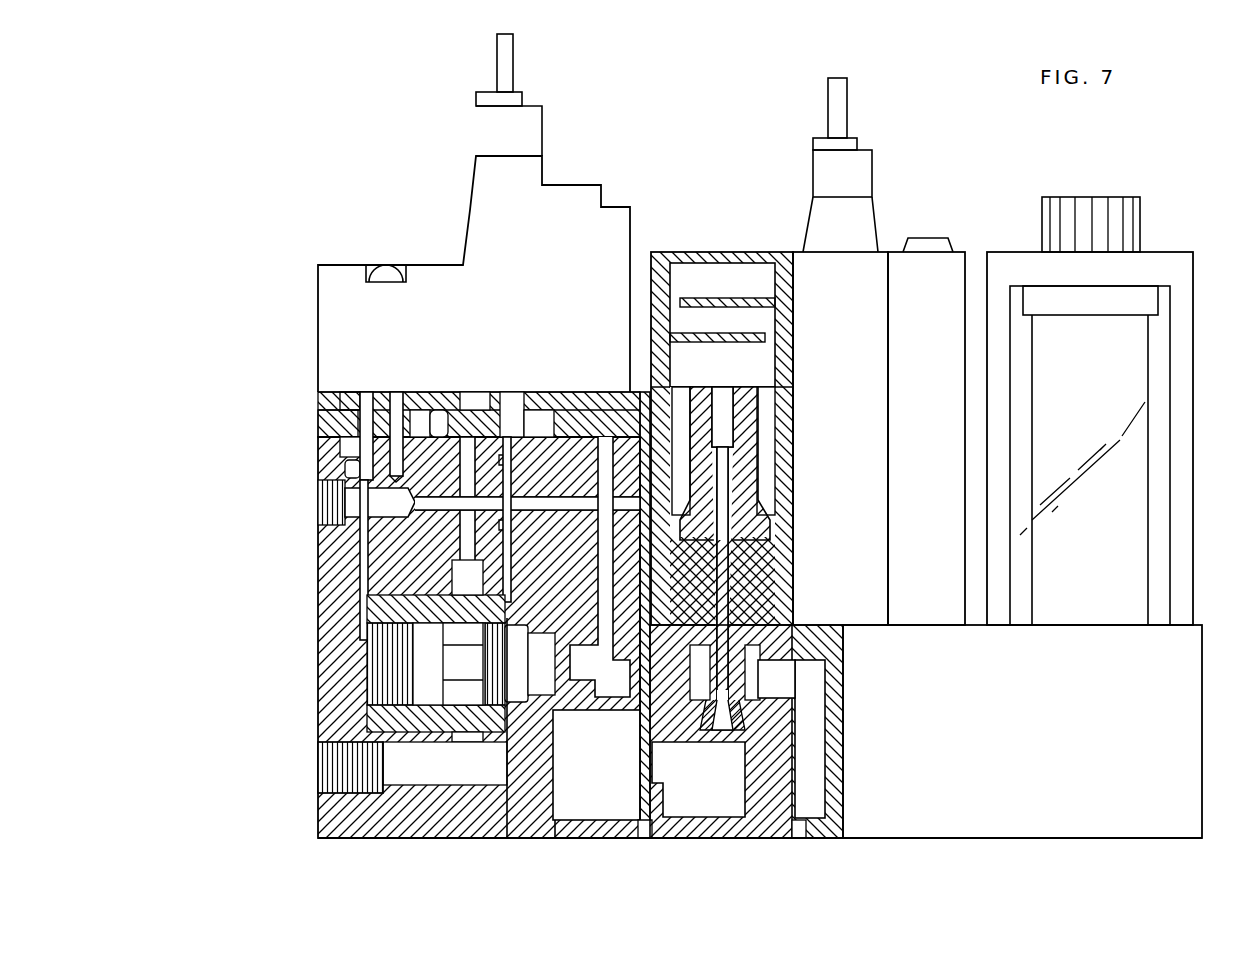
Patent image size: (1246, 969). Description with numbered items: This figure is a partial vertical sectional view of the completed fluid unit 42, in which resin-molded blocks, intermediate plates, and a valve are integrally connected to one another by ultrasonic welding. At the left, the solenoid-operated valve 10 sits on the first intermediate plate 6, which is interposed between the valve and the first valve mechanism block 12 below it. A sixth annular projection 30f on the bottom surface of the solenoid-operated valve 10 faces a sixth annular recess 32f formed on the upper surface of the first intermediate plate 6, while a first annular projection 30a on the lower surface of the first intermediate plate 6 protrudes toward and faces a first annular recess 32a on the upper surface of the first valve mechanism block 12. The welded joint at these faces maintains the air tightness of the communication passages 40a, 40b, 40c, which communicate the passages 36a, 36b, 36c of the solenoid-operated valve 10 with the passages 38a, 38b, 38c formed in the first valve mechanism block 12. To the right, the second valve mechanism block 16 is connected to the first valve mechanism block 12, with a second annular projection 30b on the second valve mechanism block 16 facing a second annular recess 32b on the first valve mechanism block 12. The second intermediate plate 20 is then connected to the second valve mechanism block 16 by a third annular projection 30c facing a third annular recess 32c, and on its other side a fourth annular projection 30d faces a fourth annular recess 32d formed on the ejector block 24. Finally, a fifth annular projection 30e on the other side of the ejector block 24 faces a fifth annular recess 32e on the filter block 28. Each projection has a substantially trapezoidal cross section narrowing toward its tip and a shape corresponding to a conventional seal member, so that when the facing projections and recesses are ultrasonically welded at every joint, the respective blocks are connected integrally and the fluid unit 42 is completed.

The first intermediate plate 6 is at (340, 430).
The solenoid-operated valve 10 is at (304, 304).
The first valve mechanism block 12 is at (309, 639).
The second valve mechanism block 16 is at (542, 853).
The second intermediate plate 20 is at (645, 835).
The ejector block 24 is at (715, 850).
The filter block 28 is at (829, 853).
The first annular projection 30a is at (340, 447).
The second annular projection 30b is at (364, 570).
The third annular projection 30c is at (618, 698).
The fourth annular projection 30d is at (678, 732).
The fifth annular projection 30e is at (796, 630).
The sixth annular projection 30f is at (366, 392).
The first annular recess 32a is at (475, 392).
The second annular recess 32b is at (390, 540).
The third annular recess 32c is at (700, 402).
The fourth annular recess 32d is at (760, 525).
The fifth annular recess 32e is at (795, 838).
The sixth annular recess 32f is at (345, 392).
The passage 36a is at (360, 392).
The passage 36b is at (396, 392).
The passage 36c is at (512, 392).
The passage 38a is at (345, 468).
The passage 38b is at (439, 410).
The passage 38c is at (480, 460).
The communication passage 40a is at (340, 418).
The communication passage 40b is at (420, 410).
The communication passage 40c is at (540, 410).
The fluid unit 42 is at (685, 90).